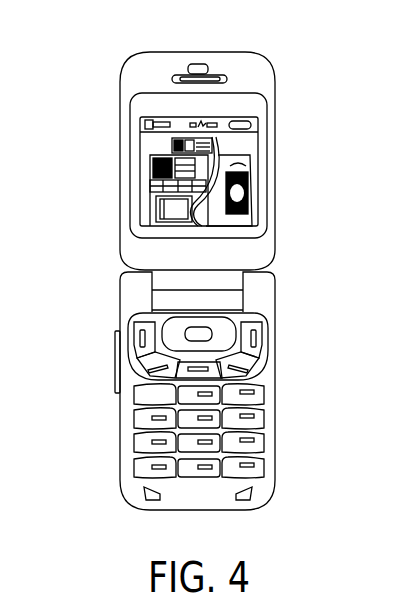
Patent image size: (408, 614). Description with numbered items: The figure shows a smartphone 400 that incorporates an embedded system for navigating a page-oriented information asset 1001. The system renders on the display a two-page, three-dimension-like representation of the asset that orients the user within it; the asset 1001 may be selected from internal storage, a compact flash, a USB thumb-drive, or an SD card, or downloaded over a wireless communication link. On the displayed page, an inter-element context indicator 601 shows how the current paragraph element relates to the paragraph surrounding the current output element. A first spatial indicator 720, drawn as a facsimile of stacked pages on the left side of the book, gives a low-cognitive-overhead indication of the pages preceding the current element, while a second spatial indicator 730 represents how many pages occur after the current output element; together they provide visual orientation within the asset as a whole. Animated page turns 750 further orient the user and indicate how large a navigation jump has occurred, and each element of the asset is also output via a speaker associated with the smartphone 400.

The smartphone 400 is at (268, 486).
The animated page turns 750 is at (234, 118).
The page-oriented information asset 1001 is at (152, 163).
The inter-element context indicator 601 is at (152, 184).
The first spatial indicator 720 is at (152, 212).
The second spatial indicator 730 is at (244, 208).